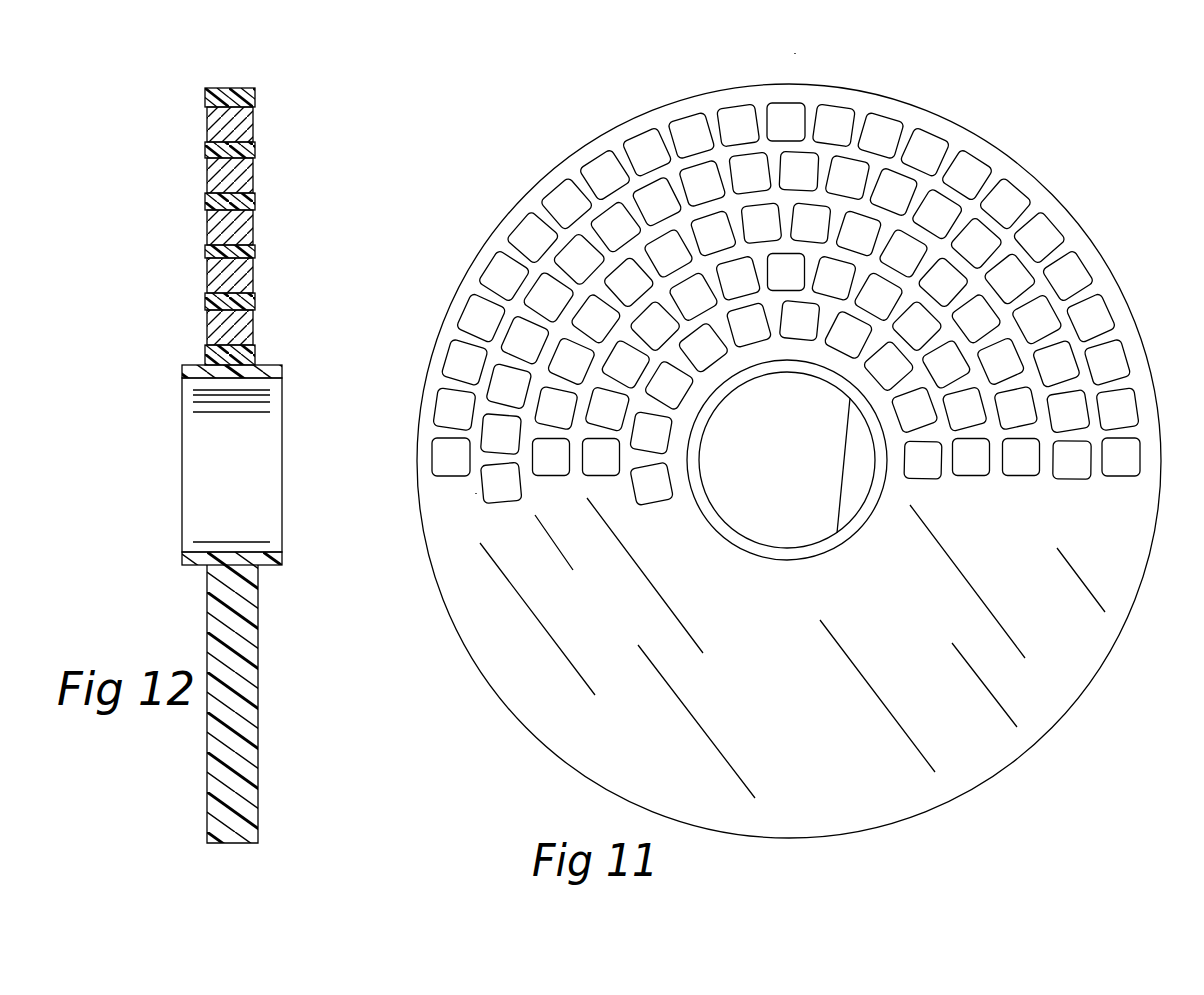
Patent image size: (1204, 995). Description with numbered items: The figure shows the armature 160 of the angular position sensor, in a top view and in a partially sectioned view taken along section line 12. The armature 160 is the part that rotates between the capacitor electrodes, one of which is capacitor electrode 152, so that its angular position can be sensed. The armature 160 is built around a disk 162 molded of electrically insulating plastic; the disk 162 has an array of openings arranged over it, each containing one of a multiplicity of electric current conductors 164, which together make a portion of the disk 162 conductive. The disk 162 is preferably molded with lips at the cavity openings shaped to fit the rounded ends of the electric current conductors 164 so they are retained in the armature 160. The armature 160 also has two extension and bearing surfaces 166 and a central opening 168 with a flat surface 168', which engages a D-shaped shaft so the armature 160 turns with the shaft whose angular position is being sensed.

In FIG. 11, the section line 12 is at (795, 68).
In FIG. 11, the capacitor electrode 152 is at (798, 725).
In FIG. 11, the armature 160 is at (480, 700).
In FIG. 12, the armature 160 is at (290, 632).
In FIG. 11, the disk 162 is at (475, 493).
In FIG. 12, the disk 162 is at (207, 150).
In FIG. 11, the electric current conductors 164 is at (1005, 203).
In FIG. 12, the electric current conductors 164 is at (250, 225).
In FIG. 11, the extension and bearing surfaces 166 is at (852, 540).
In FIG. 12, the extension and bearing surfaces 166 is at (273, 565).
In FIG. 11, the central opening 168 is at (787, 460).
In FIG. 12, the central opening 168 is at (232, 465).
In FIG. 11, the flat surface 168' is at (811, 499).